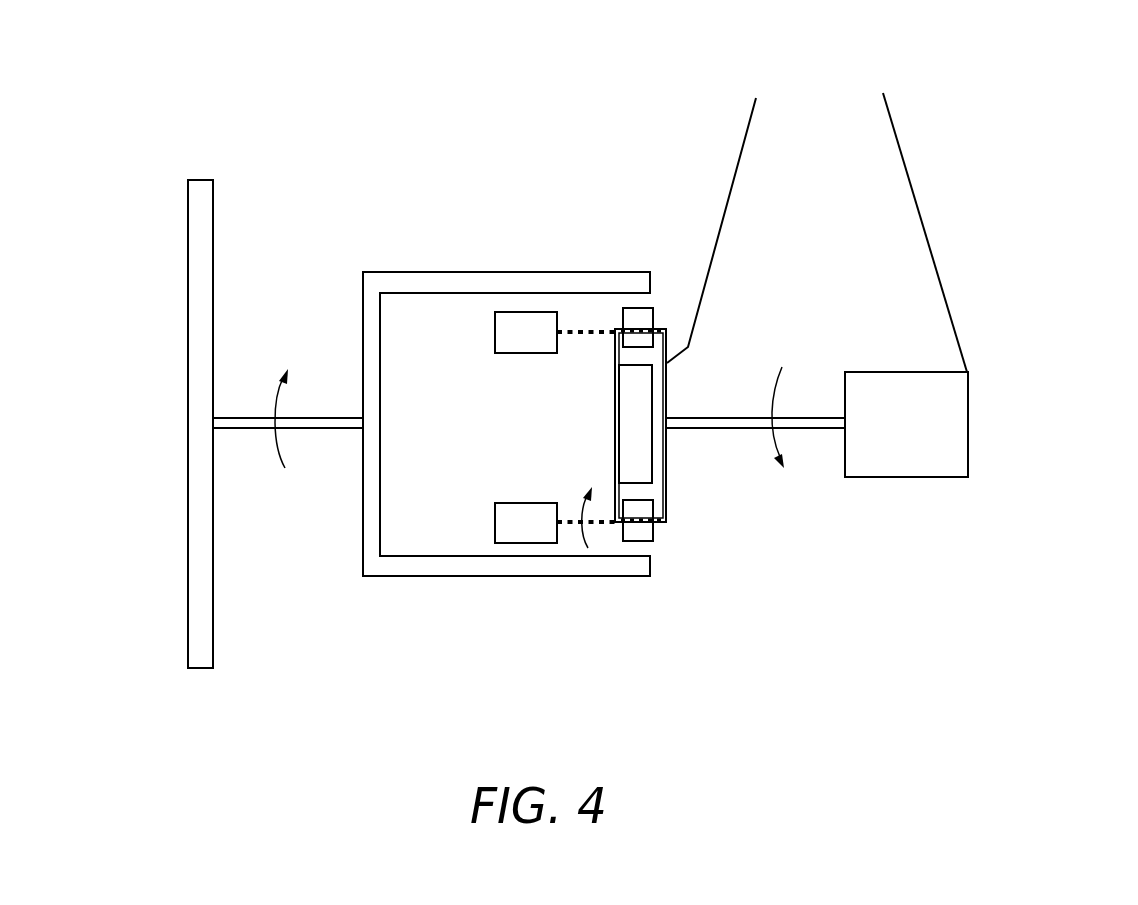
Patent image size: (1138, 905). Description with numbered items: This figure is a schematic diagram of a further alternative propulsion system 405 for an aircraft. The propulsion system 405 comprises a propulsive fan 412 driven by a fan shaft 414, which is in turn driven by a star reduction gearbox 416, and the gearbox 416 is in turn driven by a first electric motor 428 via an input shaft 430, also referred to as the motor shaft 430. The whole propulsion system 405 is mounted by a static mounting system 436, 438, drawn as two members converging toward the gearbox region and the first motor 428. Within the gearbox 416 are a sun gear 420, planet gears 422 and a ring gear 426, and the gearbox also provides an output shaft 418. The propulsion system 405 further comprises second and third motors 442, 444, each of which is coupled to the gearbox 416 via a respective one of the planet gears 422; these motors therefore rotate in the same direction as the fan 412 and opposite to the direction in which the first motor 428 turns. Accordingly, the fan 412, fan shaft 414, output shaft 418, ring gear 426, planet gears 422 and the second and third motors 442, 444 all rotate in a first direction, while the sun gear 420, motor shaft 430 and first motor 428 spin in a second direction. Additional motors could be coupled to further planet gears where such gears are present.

The propulsion system 405 is at (529, 130).
The propulsive fan 412 is at (188, 229).
The fan shaft 414 is at (320, 428).
The star reduction gearbox 416 is at (633, 578).
The output shaft 418 is at (363, 309).
The sun gear 420 is at (628, 382).
The planet gears 422 is at (643, 541).
The ring gear 426 is at (652, 565).
The first electric motor 428 is at (968, 452).
The input shaft 430 is at (719, 418).
The static mounting system 436 is at (733, 177).
The static mounting system 438 is at (910, 171).
The second motor 442 is at (525, 502).
The third motor 444 is at (525, 353).